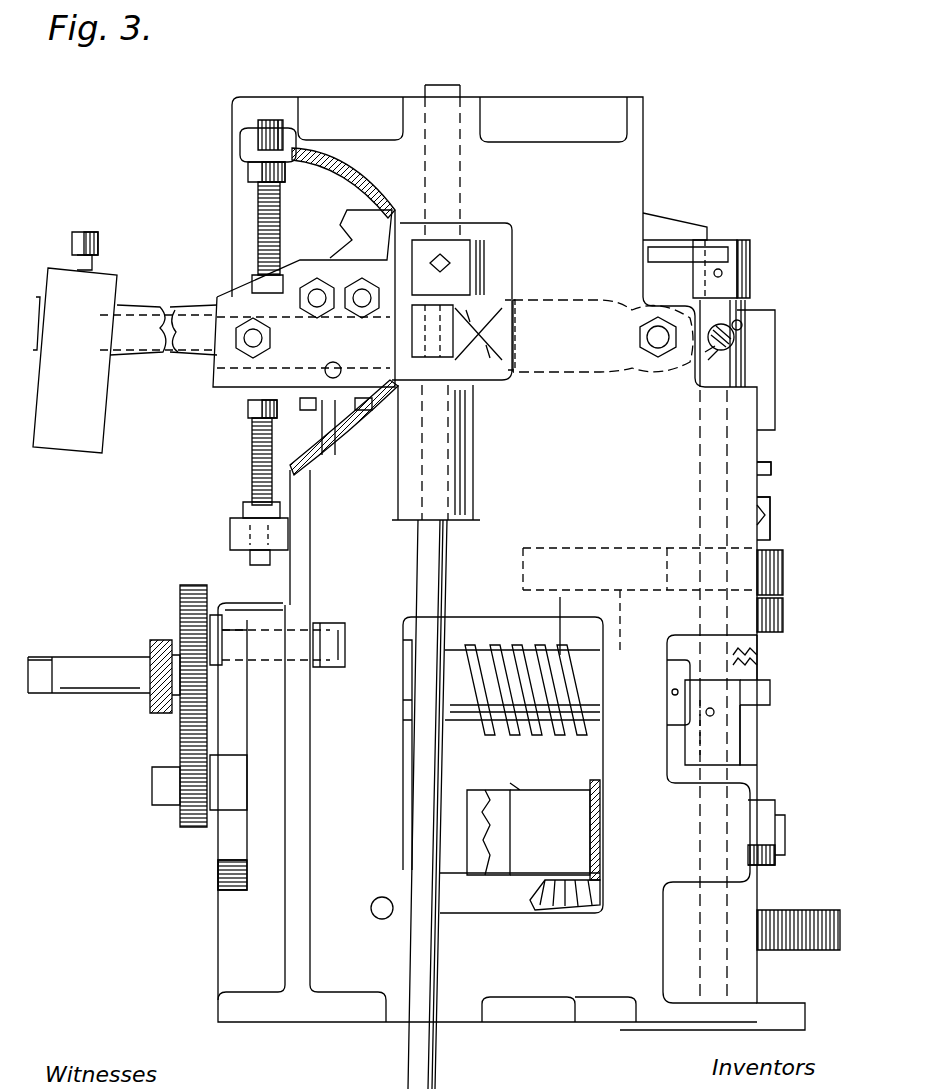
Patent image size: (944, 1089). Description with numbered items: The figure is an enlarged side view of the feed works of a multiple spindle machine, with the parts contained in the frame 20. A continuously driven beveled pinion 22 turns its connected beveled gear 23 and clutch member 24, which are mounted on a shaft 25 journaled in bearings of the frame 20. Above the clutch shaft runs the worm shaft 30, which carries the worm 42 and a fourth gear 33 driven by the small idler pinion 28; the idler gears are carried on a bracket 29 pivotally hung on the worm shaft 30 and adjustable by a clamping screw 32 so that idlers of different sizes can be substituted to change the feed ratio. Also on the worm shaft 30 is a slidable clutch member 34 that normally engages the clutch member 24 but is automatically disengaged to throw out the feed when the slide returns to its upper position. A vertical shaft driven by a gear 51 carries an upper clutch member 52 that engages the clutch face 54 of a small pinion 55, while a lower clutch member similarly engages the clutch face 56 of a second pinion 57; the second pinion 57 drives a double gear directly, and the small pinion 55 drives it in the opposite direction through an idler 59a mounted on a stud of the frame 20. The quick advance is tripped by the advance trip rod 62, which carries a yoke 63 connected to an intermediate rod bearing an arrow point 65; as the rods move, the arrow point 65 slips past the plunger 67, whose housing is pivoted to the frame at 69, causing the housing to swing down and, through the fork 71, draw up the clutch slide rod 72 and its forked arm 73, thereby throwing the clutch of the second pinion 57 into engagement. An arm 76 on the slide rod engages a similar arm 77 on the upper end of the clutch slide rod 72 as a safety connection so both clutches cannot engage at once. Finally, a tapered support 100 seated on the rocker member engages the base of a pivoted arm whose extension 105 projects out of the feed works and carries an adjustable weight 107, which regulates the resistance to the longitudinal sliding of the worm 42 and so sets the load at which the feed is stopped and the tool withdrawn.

The frame 20 is at (511, 563).
The beveled pinion 22 is at (548, 925).
The beveled gear 23 is at (598, 842).
The clutch member 24 is at (550, 829).
The shaft 25 is at (780, 833).
The idler pinion 28 is at (195, 822).
The bracket 29 is at (238, 822).
The worm shaft 30 is at (68, 665).
The clamping screw 32 is at (218, 640).
The fourth gear 33 is at (190, 723).
The slidable clutch member 34 is at (454, 798).
The worm 42 is at (552, 742).
The gear 51 is at (826, 950).
The upper clutch member 52 is at (763, 495).
The clutch face 54 is at (768, 530).
The small pinion 55 is at (785, 568).
The clutch face 56 is at (760, 668).
The second pinion 57 is at (785, 610).
The idler 59a is at (620, 560).
The advance trip rod 62 is at (418, 566).
The yoke 63 is at (468, 278).
The arrow point 65 is at (457, 314).
The plunger 67 is at (485, 336).
The pivot 69 is at (646, 338).
The fork 71 is at (740, 348).
The clutch slide rod 72 is at (725, 375).
The forked arm 73 is at (765, 693).
The arm 76 is at (663, 228).
The arm 77 is at (680, 253).
The support 100 is at (330, 433).
The extension 105 is at (183, 353).
The weight 107 is at (75, 342).